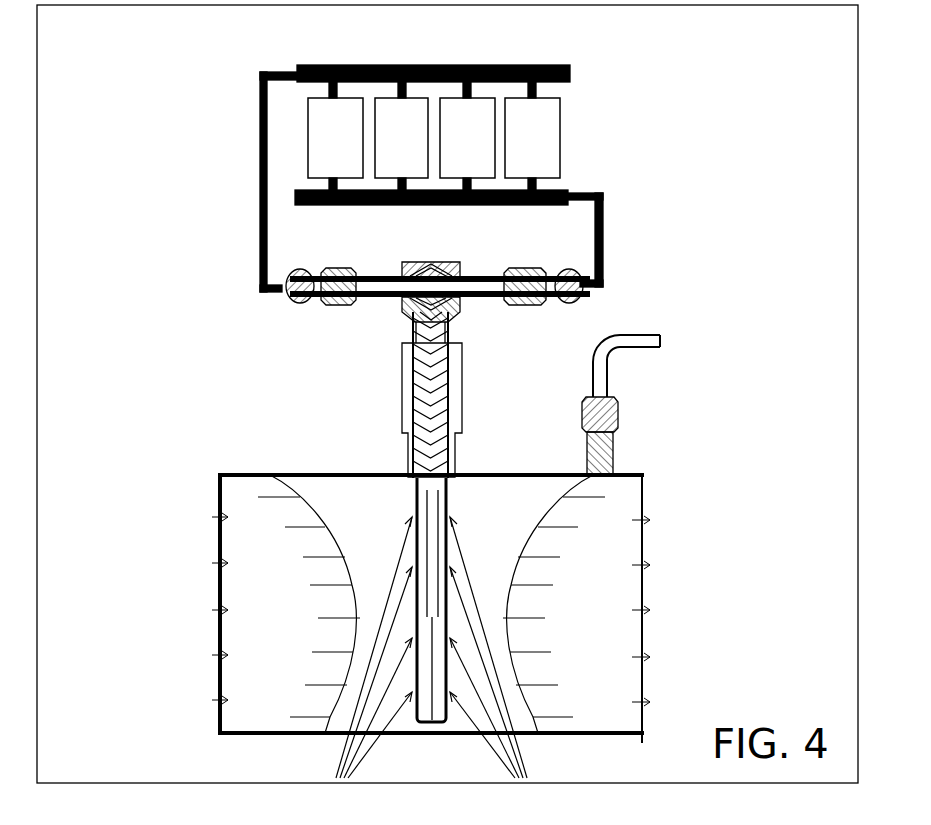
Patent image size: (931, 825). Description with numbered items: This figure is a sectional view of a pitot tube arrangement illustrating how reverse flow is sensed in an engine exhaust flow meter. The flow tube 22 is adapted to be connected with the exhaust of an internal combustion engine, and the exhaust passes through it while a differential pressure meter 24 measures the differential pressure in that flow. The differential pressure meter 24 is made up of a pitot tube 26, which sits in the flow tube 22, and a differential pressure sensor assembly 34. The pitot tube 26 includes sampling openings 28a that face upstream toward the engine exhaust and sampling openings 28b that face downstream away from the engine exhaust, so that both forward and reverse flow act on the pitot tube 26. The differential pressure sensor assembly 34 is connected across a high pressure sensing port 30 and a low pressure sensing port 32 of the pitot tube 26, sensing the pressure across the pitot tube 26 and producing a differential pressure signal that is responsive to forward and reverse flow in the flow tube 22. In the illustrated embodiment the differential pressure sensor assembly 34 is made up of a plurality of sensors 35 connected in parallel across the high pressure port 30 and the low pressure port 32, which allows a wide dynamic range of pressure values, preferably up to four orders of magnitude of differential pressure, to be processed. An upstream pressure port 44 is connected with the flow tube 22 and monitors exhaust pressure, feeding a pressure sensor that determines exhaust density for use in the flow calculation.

The flow tube 22 is at (242, 470).
The differential pressure meter 24 is at (753, 120).
The pitot tube 26 is at (405, 404).
The sampling openings 28a is at (524, 650).
The sampling openings 28b is at (347, 651).
The high pressure sensing port 30 is at (605, 242).
The low pressure sensing port 32 is at (258, 257).
The differential pressure sensor assembly 34 is at (590, 115).
The sensors 35 is at (345, 113).
The upstream pressure port 44 is at (648, 337).